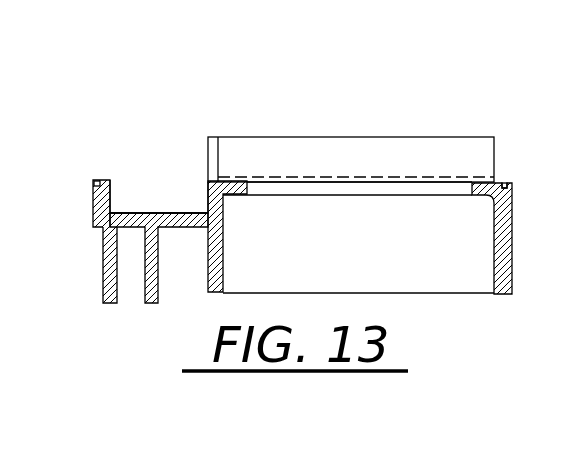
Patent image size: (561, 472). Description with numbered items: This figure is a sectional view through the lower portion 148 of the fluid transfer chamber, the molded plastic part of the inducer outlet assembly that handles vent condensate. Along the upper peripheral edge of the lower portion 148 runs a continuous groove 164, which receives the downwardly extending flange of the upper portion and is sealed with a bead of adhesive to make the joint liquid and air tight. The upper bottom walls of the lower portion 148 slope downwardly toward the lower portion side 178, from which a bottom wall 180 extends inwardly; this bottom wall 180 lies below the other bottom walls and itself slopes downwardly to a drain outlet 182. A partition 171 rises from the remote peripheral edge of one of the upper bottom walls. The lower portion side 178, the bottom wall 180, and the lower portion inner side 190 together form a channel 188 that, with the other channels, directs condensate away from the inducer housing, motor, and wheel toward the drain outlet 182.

The lower portion 148 is at (322, 115).
The partition 171 is at (382, 150).
The continuous groove 164 is at (505, 187).
The lower portion side 178 is at (93, 202).
The drain outlet 182 is at (117, 272).
The lower portion inner side 190 is at (199, 210).
The channel 188 is at (122, 196).
The bottom wall 180 is at (168, 212).